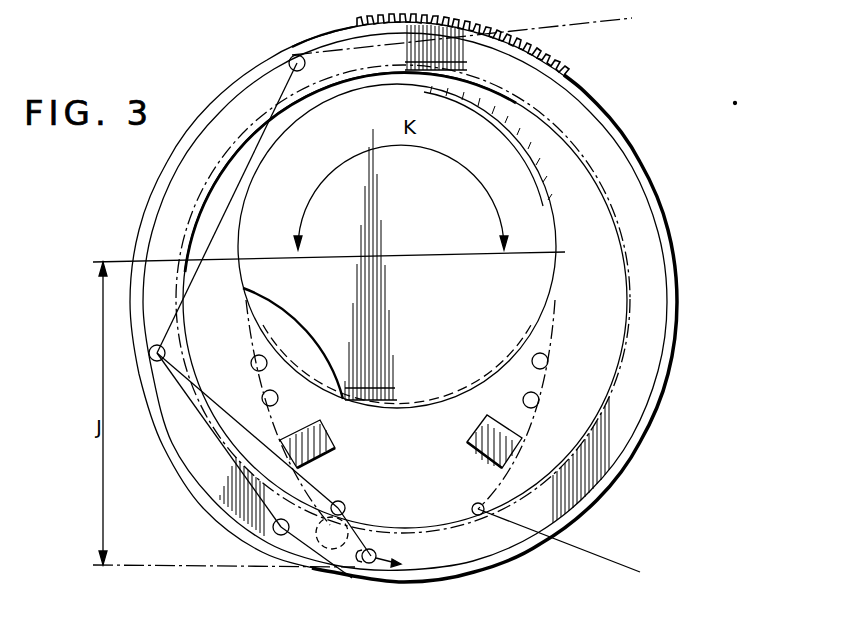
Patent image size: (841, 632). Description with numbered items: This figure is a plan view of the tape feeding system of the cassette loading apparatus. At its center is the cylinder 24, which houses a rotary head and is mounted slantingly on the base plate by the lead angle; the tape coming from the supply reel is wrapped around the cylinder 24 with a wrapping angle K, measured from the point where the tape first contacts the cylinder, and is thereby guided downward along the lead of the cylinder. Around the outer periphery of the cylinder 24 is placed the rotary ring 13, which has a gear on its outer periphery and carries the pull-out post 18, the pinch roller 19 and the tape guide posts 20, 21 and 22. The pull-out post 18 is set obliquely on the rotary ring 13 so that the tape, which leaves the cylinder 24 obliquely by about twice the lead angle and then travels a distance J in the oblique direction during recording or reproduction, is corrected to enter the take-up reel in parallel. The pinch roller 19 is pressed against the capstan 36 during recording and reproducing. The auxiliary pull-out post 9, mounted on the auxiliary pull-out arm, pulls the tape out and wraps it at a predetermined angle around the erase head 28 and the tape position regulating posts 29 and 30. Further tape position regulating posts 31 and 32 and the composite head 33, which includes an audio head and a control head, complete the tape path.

The auxiliary pull-out post 9 is at (472, 507).
The rotary ring 13 is at (497, 542).
The pull-out post 18 is at (370, 565).
The pinch roller 19 is at (324, 550).
The tape guide post 20 is at (273, 532).
The tape guide post 21 is at (149, 356).
The tape guide post 22 is at (291, 57).
The cylinder 24 is at (538, 212).
The erase head 28 is at (468, 436).
The tape position regulating post 29 is at (523, 402).
The tape position regulating post 30 is at (534, 368).
The tape position regulating post 31 is at (266, 370).
The tape position regulating post 32 is at (278, 402).
The composite head 33 is at (328, 430).
The capstan 36 is at (346, 504).